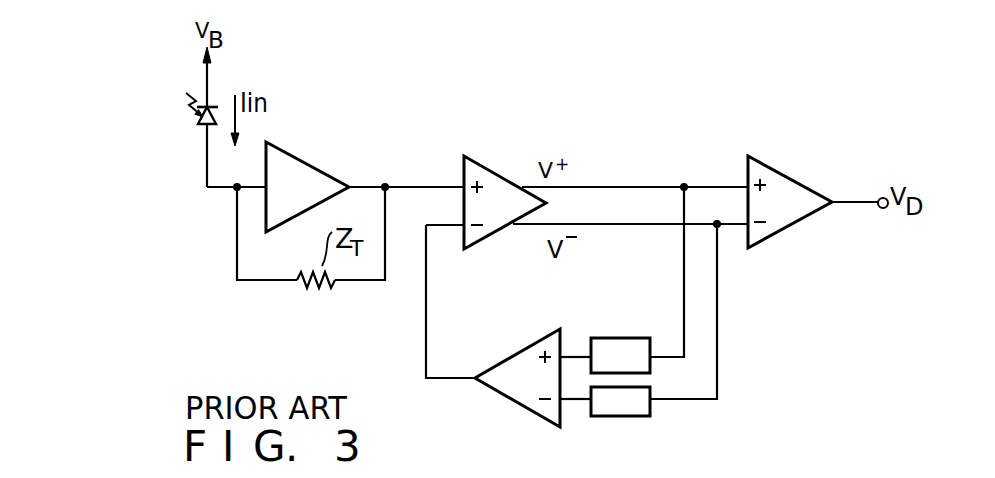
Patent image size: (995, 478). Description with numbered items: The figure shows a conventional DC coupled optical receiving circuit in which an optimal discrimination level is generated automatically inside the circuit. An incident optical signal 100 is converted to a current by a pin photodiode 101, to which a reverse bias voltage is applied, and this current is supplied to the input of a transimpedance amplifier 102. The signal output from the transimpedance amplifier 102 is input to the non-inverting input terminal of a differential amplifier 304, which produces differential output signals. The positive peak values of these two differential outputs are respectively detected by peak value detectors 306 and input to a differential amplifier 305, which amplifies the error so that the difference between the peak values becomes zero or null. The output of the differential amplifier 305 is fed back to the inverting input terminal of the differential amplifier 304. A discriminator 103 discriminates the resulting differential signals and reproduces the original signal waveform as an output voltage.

The incident optical signal 100 is at (167, 98).
The pin photodiode 101 is at (180, 147).
The transimpedance amplifier 102 is at (331, 171).
The discriminator 103 is at (804, 178).
The differential amplifier 304 is at (507, 172).
The differential amplifier 305 is at (503, 362).
The peak value detectors 306 is at (622, 338).